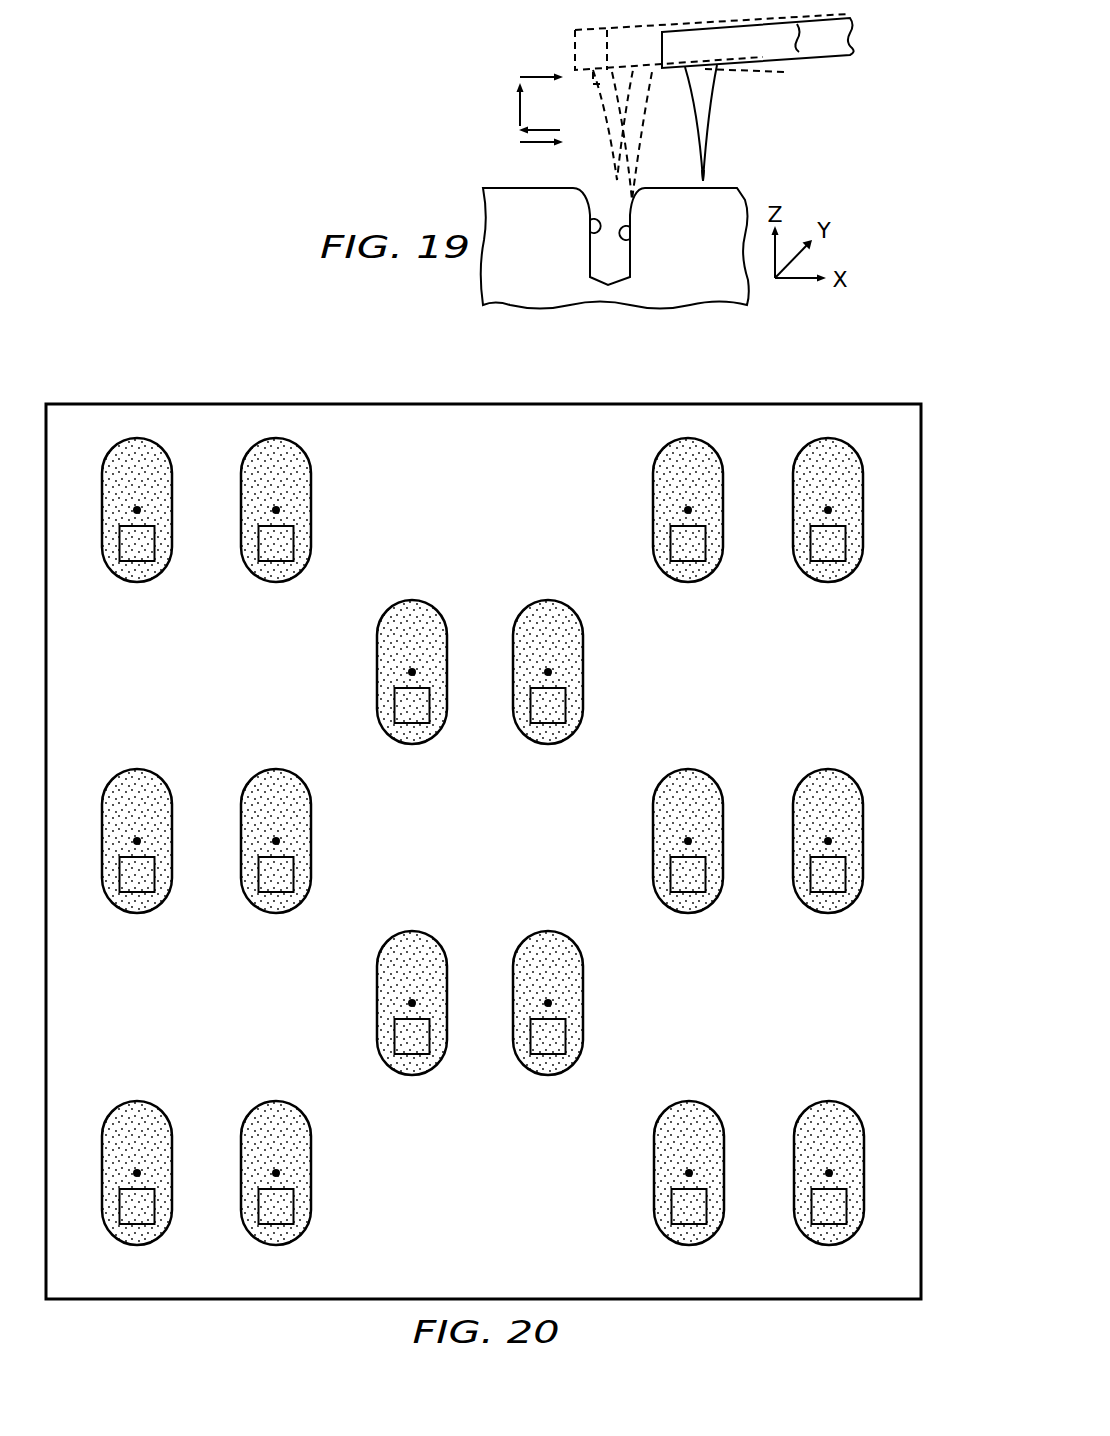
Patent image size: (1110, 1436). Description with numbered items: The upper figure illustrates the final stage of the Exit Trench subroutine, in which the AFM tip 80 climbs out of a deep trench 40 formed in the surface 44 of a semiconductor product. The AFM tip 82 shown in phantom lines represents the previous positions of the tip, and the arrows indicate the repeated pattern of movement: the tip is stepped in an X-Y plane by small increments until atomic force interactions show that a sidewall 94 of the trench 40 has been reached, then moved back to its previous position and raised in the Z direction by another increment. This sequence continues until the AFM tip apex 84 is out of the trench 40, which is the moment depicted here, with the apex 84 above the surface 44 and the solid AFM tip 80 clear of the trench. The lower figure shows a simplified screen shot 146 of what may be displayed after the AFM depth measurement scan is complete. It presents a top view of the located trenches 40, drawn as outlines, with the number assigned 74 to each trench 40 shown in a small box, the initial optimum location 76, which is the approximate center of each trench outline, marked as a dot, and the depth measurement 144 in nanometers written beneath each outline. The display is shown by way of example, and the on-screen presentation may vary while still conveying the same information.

In FIG. 19, the trench 40 is at (603, 196).
In FIG. 20, the trench 40 is at (102, 482).
In FIG. 19, the surface 44 is at (505, 188).
In FIG. 20, the number assigned 74 is at (120, 550).
In FIG. 20, the initial optimum location 76 is at (141, 508).
In FIG. 19, the AFM tip 80 is at (712, 103).
In FIG. 19, the AFM tip in phantom lines 82 is at (575, 62).
In FIG. 19, the AFM tip apex 84 is at (706, 181).
In FIG. 19, the sidewall 94 is at (583, 229).
In FIG. 20, the depth measurement 144 is at (142, 610).
In FIG. 20, the screen shot 146 is at (273, 398).